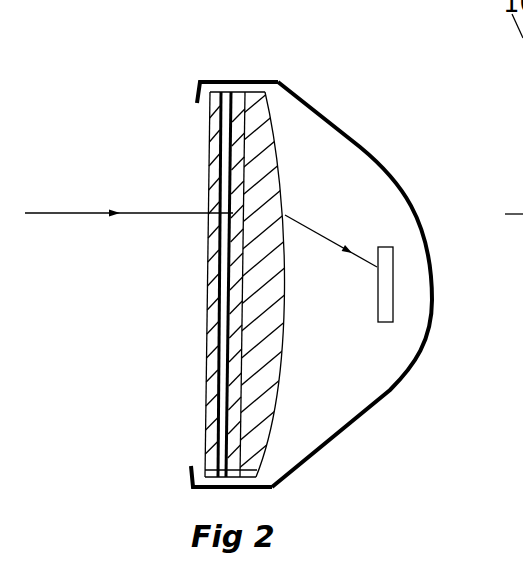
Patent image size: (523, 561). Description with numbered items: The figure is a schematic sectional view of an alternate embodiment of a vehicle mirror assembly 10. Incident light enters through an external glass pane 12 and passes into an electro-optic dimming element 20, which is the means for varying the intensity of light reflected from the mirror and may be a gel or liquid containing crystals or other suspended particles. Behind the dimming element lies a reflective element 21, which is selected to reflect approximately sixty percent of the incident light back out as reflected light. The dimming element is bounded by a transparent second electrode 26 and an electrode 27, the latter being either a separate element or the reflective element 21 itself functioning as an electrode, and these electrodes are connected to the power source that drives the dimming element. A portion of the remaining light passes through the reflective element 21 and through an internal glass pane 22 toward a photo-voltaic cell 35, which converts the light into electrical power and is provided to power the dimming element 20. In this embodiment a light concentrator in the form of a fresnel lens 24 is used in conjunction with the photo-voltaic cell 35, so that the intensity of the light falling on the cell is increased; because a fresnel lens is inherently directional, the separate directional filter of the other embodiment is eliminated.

The vehicle mirror assembly 10 is at (147, 177).
The external glass pane 12 is at (209, 160).
The electro-optic dimming element 20 is at (270, 81).
The reflective element 21 is at (221, 372).
The internal glass pane 22 is at (262, 150).
The fresnel lens 24 is at (276, 405).
The second electrode 26 is at (233, 92).
The electrode 27 is at (257, 472).
The photo-voltaic cell 35 is at (393, 307).